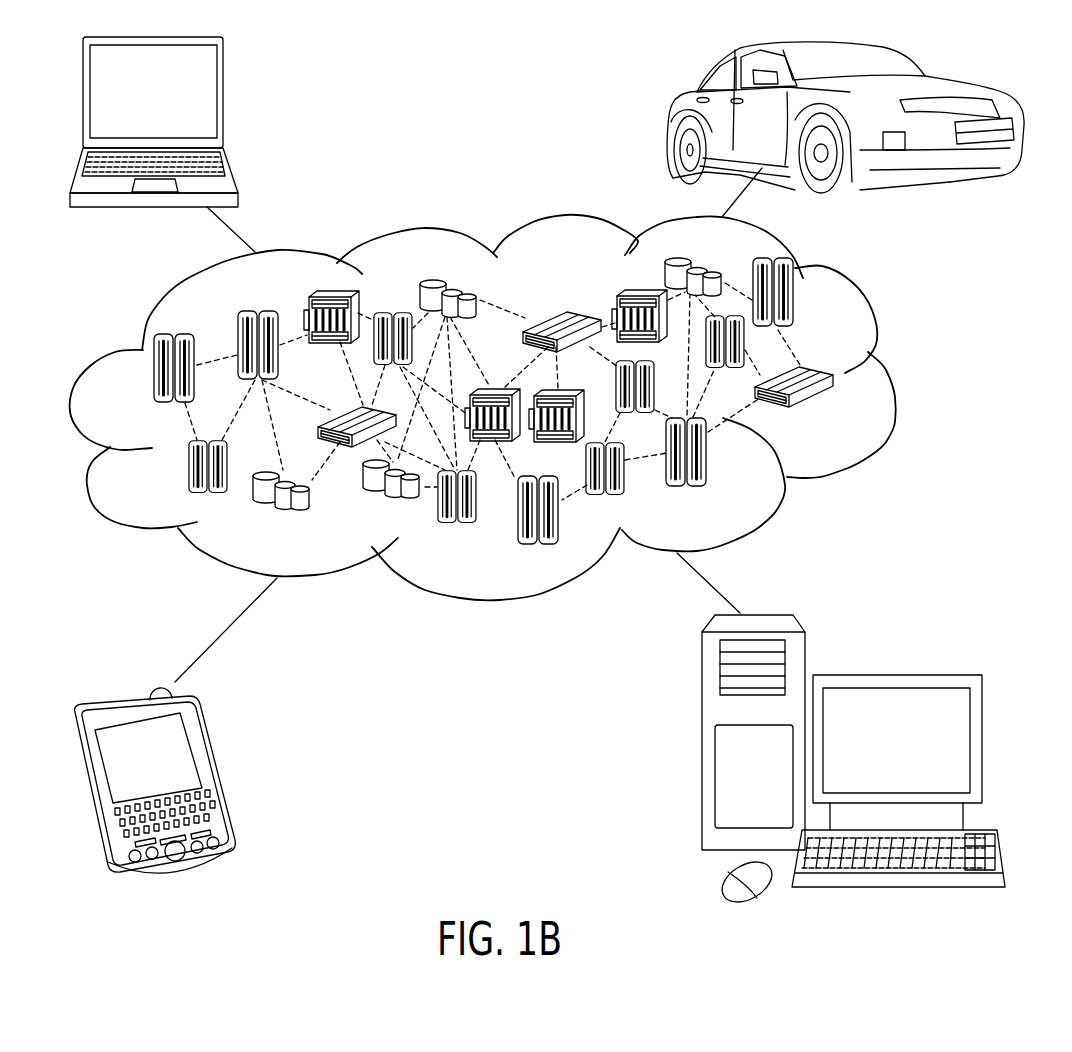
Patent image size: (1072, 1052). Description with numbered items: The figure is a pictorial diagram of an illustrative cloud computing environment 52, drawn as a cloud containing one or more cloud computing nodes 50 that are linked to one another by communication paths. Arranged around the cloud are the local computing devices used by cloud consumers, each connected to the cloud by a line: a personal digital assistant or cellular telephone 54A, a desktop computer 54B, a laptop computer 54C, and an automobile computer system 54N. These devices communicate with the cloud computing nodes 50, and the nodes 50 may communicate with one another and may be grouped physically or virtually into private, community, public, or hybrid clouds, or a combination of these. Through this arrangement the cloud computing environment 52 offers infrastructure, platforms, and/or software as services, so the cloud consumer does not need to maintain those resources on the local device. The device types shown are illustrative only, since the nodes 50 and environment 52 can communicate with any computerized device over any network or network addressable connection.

The cloud computing nodes 50 is at (522, 408).
The cloud computing environment 52 is at (893, 380).
The personal digital assistant (PDA) or cellular telephone 54A is at (213, 768).
The desktop computer 54B is at (892, 675).
The laptop computer 54C is at (223, 100).
The automobile computer system 54N is at (672, 115).